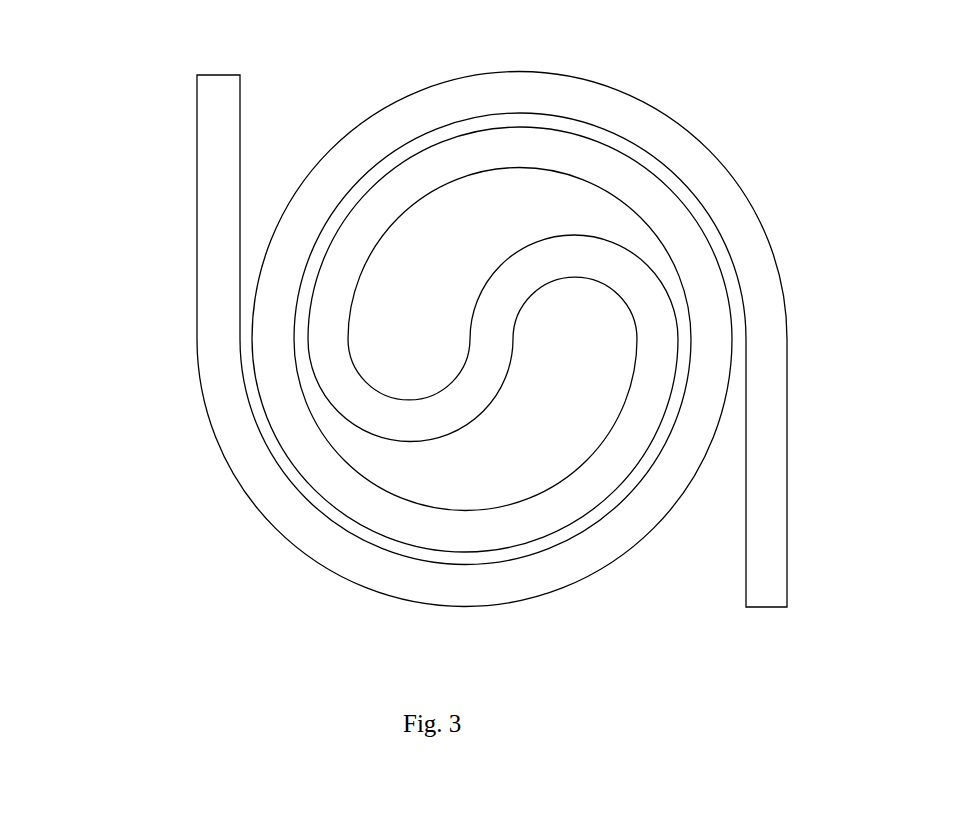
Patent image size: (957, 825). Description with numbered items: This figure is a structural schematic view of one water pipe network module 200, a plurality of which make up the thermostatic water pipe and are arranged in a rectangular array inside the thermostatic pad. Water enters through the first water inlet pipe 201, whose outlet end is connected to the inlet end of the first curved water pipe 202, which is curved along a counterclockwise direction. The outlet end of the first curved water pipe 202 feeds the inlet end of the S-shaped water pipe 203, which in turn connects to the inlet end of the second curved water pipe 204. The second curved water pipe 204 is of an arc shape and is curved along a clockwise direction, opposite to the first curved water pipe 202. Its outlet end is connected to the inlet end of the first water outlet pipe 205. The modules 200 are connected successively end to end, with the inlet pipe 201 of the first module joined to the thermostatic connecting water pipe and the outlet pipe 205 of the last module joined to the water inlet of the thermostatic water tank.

The water pipe network module 200 is at (462, 319).
The first water inlet pipe 201 is at (197, 223).
The first curved water pipe 202 is at (343, 577).
The S-shaped water pipe 203 is at (500, 266).
The second curved water pipe 204 is at (570, 77).
The first water outlet pipe 205 is at (788, 532).